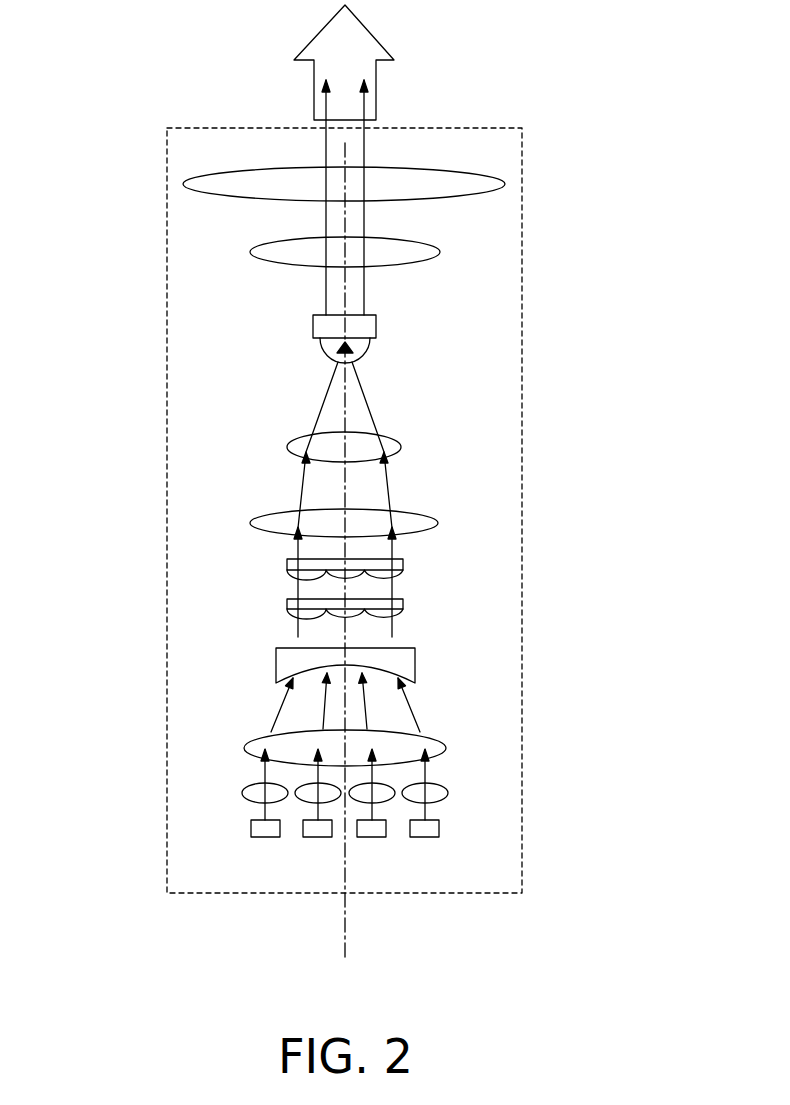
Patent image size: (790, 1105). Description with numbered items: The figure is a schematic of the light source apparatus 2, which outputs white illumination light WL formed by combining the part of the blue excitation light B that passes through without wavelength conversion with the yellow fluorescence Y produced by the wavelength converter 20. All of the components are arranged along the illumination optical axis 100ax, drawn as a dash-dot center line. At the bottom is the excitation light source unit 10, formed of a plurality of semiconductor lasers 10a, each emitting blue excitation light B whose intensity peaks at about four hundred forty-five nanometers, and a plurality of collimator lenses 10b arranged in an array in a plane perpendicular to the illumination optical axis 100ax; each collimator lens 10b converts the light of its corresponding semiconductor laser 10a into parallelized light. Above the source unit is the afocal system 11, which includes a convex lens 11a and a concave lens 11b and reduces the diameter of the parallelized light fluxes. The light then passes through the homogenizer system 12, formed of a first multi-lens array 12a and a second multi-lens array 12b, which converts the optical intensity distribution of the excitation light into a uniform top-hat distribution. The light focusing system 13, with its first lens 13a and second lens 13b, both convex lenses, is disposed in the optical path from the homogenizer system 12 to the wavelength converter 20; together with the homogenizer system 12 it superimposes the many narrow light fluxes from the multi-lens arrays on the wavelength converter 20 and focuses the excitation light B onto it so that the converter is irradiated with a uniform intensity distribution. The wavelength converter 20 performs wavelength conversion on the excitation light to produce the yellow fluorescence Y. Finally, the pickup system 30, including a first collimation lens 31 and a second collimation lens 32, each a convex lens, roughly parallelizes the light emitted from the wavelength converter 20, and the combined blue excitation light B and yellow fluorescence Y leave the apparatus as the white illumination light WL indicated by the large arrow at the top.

The light source apparatus 2 is at (167, 150).
The excitation light source unit 10 is at (449, 797).
The semiconductor lasers 10a is at (438, 818).
The collimator lenses 10b is at (433, 778).
The afocal system 11 is at (449, 704).
The convex lens 11a is at (430, 732).
The concave lens 11b is at (415, 662).
The homogenizer system 12 is at (471, 586).
The first multi-lens array 12a is at (402, 620).
The second multi-lens array 12b is at (402, 572).
The light focusing system 13 is at (452, 482).
The first lens 13a is at (403, 508).
The second lens 13b is at (400, 438).
The wavelength converter 20 is at (320, 327).
The pickup system 30 is at (422, 239).
The first collimation lens 31 is at (427, 263).
The second collimation lens 32 is at (433, 205).
The illumination optical axis 100ax is at (343, 940).
The blue excitation light B is at (326, 148).
The yellow fluorescence Y is at (364, 148).
The white illumination light WL is at (357, 35).